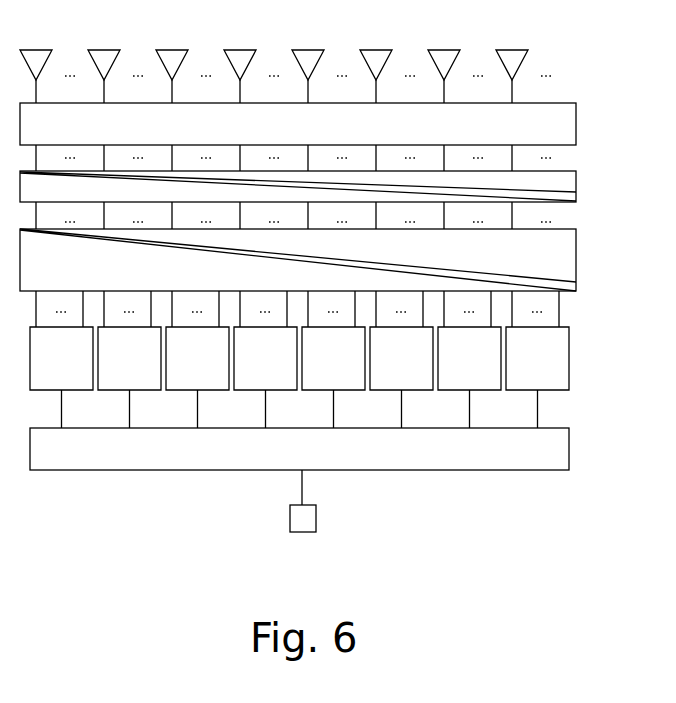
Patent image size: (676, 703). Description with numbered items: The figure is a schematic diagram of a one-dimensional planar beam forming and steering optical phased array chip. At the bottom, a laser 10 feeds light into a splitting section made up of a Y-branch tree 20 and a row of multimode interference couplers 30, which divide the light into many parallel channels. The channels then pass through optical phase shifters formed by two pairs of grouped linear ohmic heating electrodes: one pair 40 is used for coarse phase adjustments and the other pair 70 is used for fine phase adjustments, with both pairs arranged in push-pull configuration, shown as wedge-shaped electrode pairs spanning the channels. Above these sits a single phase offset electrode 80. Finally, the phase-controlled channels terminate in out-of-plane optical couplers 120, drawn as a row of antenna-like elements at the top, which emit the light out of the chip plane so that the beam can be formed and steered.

The out-of-plane optical couplers 120 is at (540, 54).
The phase offset electrode 80 is at (590, 118).
The pair of grouped linear ohmic heating electrodes for fine phase adjustments 70 is at (590, 186).
The pair of grouped linear ohmic heating electrodes for coarse phase adjustments 40 is at (590, 256).
The multimode interference couplers 30 is at (585, 345).
The Y-branch tree 20 is at (585, 438).
The laser 10 is at (304, 542).